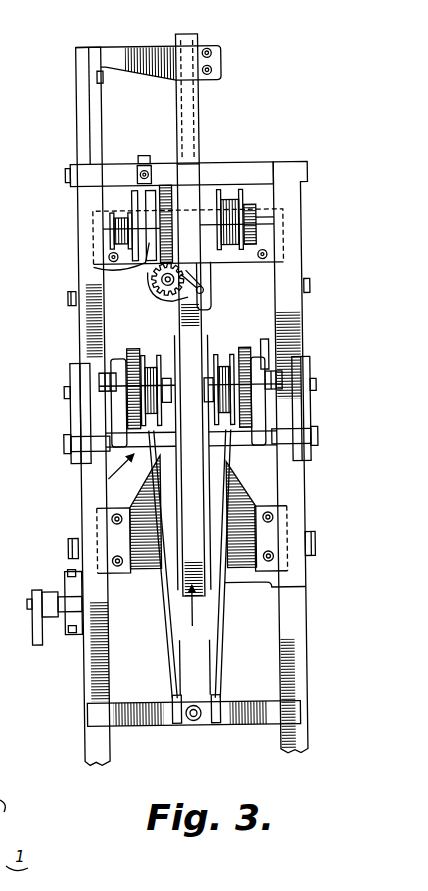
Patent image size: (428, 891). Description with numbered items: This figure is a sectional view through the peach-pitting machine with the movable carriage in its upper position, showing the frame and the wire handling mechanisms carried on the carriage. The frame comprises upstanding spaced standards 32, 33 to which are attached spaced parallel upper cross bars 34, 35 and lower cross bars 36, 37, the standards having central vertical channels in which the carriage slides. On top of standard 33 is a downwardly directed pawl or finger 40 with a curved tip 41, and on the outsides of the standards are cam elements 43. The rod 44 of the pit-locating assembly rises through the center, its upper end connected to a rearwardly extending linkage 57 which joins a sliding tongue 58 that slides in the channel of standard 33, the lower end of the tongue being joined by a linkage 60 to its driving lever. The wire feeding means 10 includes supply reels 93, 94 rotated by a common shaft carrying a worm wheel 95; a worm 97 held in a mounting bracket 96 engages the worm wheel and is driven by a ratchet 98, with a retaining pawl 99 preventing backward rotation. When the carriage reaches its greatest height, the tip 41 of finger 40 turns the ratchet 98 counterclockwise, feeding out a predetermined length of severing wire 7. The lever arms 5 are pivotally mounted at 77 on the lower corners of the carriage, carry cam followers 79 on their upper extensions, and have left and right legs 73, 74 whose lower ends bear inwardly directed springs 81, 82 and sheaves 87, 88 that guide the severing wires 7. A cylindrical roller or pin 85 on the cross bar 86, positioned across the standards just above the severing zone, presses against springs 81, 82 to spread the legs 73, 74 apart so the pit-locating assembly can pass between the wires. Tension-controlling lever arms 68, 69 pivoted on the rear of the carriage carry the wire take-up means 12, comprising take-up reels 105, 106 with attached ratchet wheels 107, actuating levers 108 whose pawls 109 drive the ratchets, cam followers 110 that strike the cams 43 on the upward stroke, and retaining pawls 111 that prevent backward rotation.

The lever arm 5 is at (192, 612).
The flexible severing wire 7 is at (300, 590).
The wire feeding means 10 is at (257, 195).
The wire take-up means 12 is at (106, 482).
The standard 32 is at (291, 204).
The standard 33 is at (97, 237).
The upper cross bar 34 is at (312, 286).
The upper cross bar 35 is at (71, 296).
The lower cross bar 36 is at (310, 533).
The lower cross bar 37 is at (74, 542).
The pawl or finger 40 is at (148, 156).
The curved tip 41 is at (96, 262).
The cam element 43 is at (78, 456).
The rod 44 is at (193, 97).
The linkage 57 is at (145, 52).
The sliding tongue 58 is at (82, 120).
The linkage 60 is at (35, 643).
The tension-controlling lever arm 68 is at (257, 401).
The tension-controlling lever arm 69 is at (118, 408).
The left leg 73 is at (169, 633).
The right leg 74 is at (217, 622).
The pivot 77 is at (196, 502).
The cam follower 79 is at (202, 320).
The spring element 81 is at (172, 687).
The spring element 82 is at (205, 677).
The cylindrical roller or pin 85 is at (188, 723).
The cross bar 86 is at (250, 704).
The sheave 87 is at (173, 727).
The sheave 88 is at (209, 729).
The supply reel 93 is at (237, 195).
The supply reel 94 is at (115, 208).
The worm wheel 95 is at (174, 193).
The mounting bracket 96 is at (208, 273).
The worm 97 is at (158, 284).
The ratchet 98 is at (158, 299).
The retaining pawl 99 is at (206, 293).
The take-up reel 105 is at (230, 365).
The take-up reel 106 is at (155, 366).
The ratchet wheel 107 is at (113, 361).
The actuating lever 108 is at (128, 356).
The pawl 109 is at (108, 372).
The cam follower 110 is at (82, 443).
The retaining pawl 111 is at (270, 360).